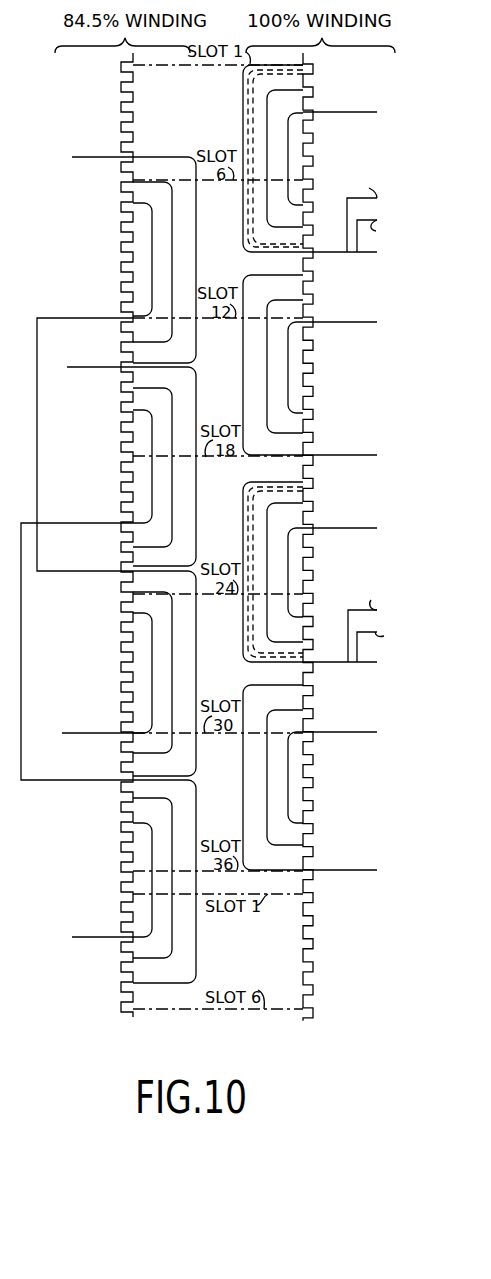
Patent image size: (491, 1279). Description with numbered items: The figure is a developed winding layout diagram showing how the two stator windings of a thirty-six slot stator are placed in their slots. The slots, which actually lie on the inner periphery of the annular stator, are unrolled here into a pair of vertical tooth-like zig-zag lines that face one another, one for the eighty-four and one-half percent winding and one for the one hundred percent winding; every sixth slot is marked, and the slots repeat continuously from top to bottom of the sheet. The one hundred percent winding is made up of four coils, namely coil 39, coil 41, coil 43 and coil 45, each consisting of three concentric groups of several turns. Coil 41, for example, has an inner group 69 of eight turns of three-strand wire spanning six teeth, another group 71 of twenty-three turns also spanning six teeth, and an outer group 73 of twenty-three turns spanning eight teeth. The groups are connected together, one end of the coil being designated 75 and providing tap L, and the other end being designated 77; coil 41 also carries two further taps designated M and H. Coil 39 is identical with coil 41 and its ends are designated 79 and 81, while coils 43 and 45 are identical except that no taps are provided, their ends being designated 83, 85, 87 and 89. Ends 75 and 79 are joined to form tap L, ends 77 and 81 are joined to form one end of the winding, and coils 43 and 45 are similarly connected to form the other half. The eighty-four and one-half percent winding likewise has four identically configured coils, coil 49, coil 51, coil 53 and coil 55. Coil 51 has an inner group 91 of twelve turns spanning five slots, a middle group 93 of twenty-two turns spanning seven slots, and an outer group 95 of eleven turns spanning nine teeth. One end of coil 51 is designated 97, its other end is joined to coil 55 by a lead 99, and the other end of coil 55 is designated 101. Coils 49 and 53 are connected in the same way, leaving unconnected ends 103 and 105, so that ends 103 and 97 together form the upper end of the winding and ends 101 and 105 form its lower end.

The coil 39 is at (374, 582).
The coil 41 is at (285, 158).
The coil 43 is at (369, 812).
The coil 45 is at (374, 400).
The coil 49 is at (96, 872).
The coil 51 is at (149, 260).
The coil 53 is at (96, 462).
The coil 55 is at (96, 650).
The inner group 69 is at (285, 121).
The group 71 is at (267, 127).
The outer group 73 is at (243, 130).
The coil end 75 is at (370, 254).
The coil end 77 is at (376, 112).
The coil end 79 is at (370, 664).
The coil end 81 is at (347, 508).
The coil end 83 is at (352, 847).
The coil end 85 is at (377, 732).
The coil end 87 is at (352, 436).
The coil end 89 is at (367, 306).
The inner group of turns 91 is at (152, 214).
The middle group 93 is at (172, 247).
The outer group 95 is at (205, 262).
The coil end 97 is at (90, 157).
The lead 99 is at (37, 445).
The coil end 101 is at (90, 733).
The coil end 103 is at (97, 937).
The coil end 105 is at (110, 367).